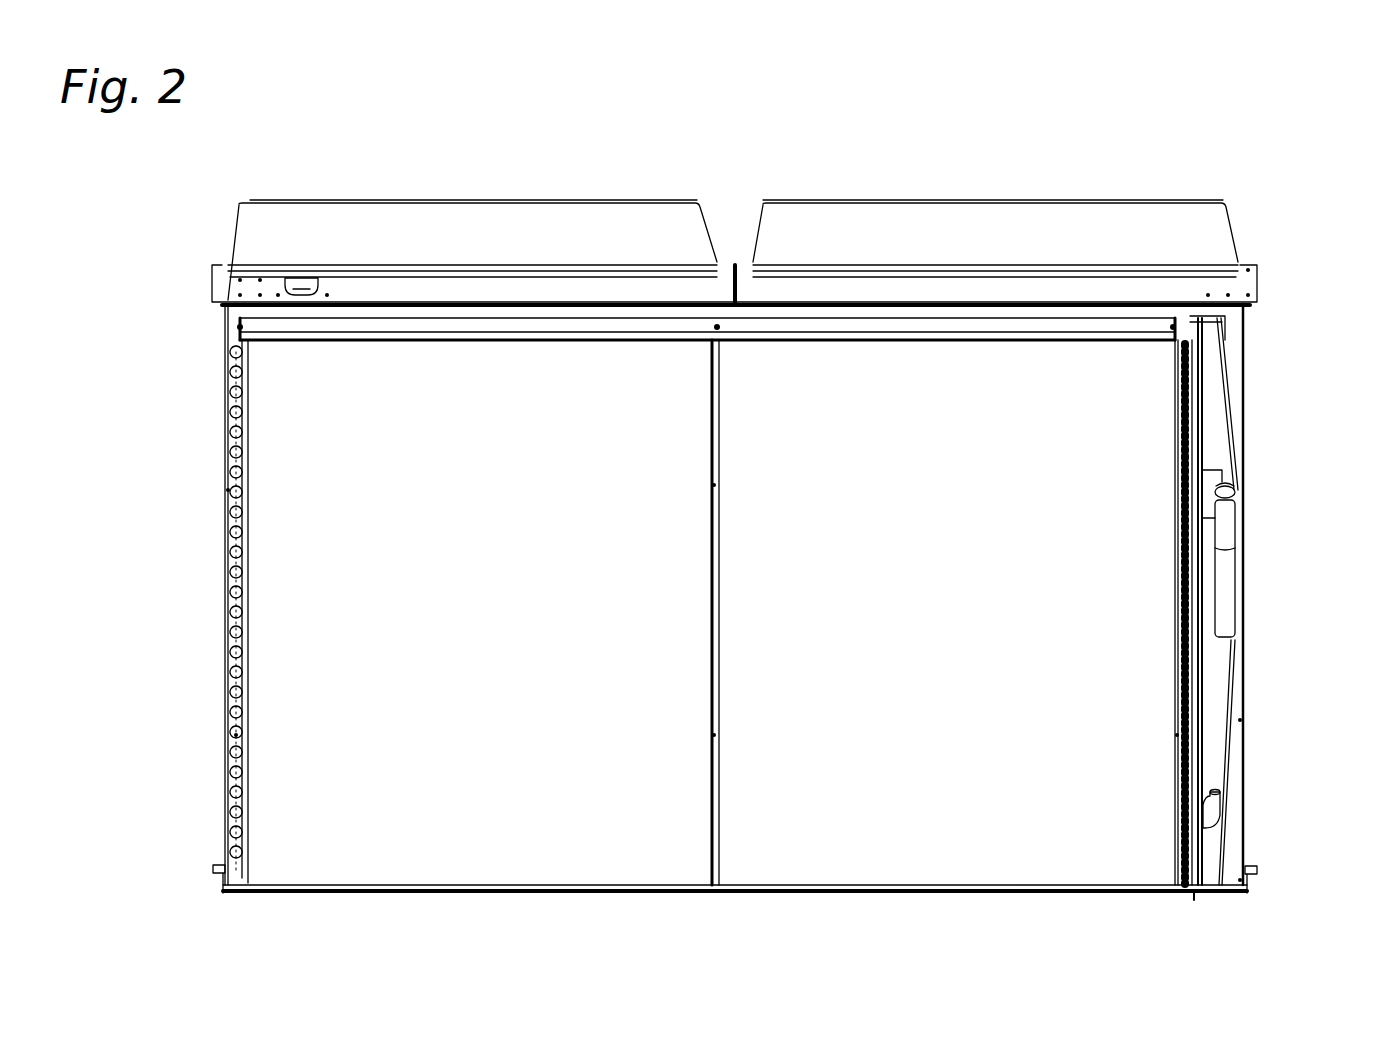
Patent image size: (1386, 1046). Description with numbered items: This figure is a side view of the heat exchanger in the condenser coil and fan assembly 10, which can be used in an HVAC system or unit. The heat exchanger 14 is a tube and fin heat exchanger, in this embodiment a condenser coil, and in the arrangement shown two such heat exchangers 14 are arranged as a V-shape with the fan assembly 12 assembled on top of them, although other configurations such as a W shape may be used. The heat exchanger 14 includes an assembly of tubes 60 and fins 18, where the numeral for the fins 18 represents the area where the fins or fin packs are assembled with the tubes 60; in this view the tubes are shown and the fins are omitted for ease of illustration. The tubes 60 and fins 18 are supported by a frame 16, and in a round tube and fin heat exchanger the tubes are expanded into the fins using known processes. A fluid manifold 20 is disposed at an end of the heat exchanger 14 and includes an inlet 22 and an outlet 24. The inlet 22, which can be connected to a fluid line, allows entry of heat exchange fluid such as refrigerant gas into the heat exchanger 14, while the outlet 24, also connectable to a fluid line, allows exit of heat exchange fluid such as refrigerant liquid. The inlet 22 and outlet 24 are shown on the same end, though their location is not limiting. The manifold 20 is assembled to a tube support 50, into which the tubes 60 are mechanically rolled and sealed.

The condenser coil and fan assembly 10 is at (1043, 128).
The fan assembly 12 is at (1265, 230).
The heat exchanger 14 is at (182, 500).
The frame 16 is at (512, 893).
The fins 18 is at (316, 667).
The fluid manifold 20 is at (1233, 412).
The inlet 22 is at (1225, 578).
The outlet 24 is at (1215, 815).
The tube support 50 is at (1195, 895).
The tubes 60 is at (1180, 842).